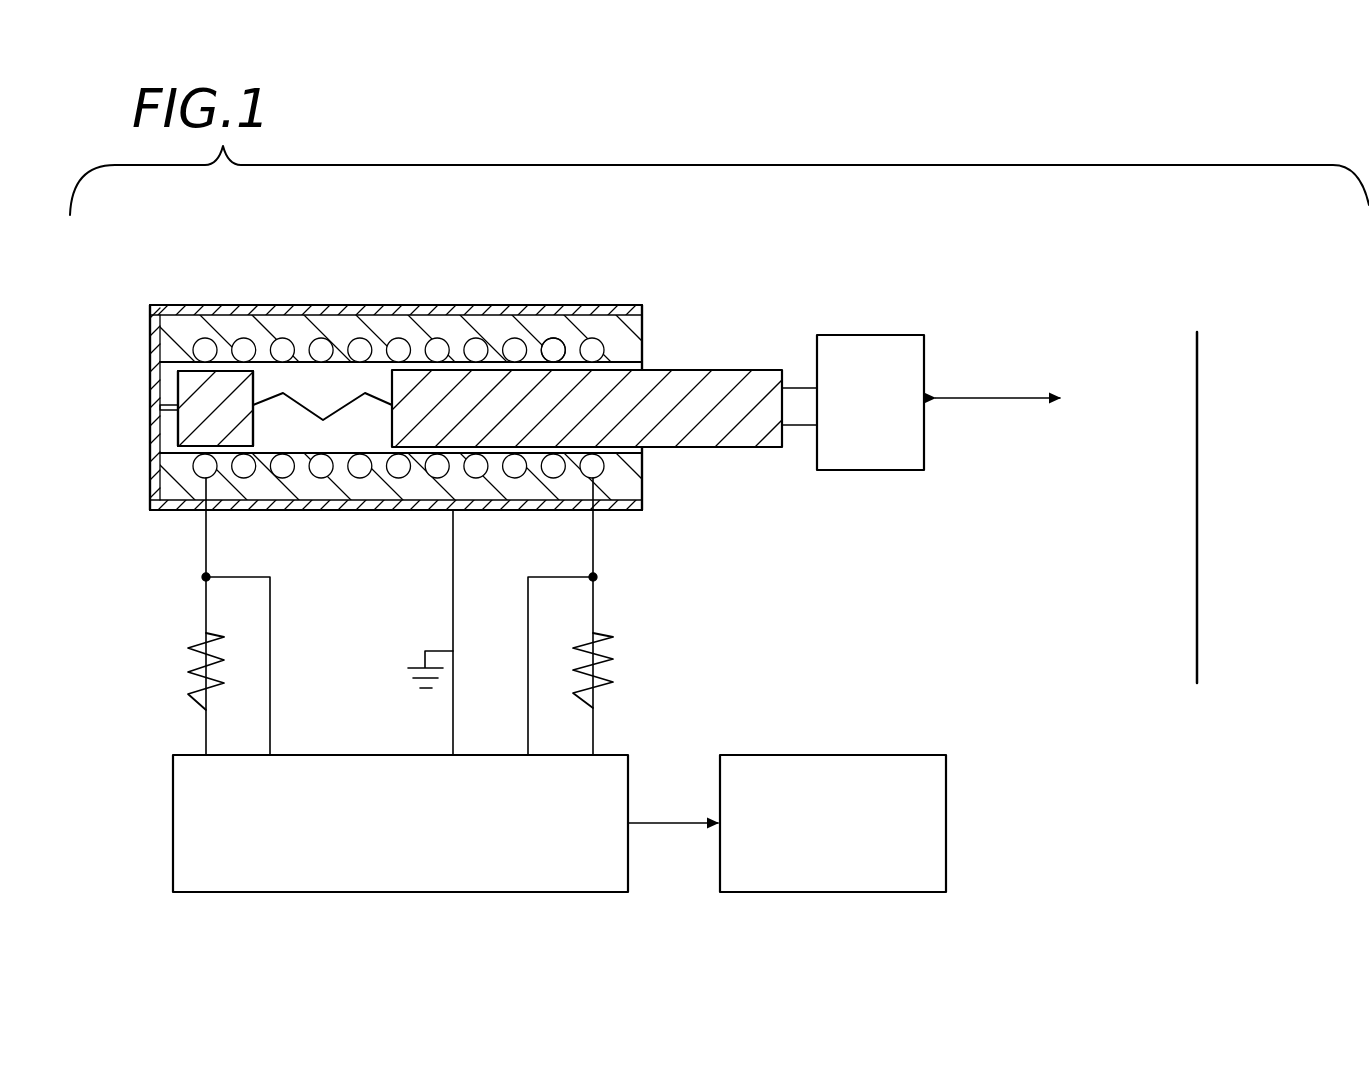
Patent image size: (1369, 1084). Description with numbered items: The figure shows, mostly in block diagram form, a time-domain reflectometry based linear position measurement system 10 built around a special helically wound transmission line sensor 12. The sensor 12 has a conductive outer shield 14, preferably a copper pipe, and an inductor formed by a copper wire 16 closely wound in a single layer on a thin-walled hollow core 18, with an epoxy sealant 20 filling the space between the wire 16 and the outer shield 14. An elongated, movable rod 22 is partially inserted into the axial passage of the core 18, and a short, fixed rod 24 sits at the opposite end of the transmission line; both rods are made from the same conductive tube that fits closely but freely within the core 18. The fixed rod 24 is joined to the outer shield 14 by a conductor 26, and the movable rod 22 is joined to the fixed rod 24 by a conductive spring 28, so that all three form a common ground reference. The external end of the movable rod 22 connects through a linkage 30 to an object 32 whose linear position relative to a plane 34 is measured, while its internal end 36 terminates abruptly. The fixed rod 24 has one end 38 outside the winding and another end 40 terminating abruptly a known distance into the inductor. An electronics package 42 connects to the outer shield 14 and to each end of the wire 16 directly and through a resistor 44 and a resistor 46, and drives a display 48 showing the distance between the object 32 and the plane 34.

The linear position measurement system 10 is at (1114, 262).
The helically wound transmission line sensor 12 is at (192, 260).
The conductive outer shield 14 is at (508, 305).
The copper wire 16 is at (553, 350).
The thin-walled hollow core 18 is at (160, 335).
The epoxy sealant 20 is at (300, 336).
The movable rod 22 is at (730, 370).
The fixed rod 24 is at (178, 436).
The conductor 26 is at (168, 405).
The conductive spring 28 is at (374, 239).
The linkage 30 is at (800, 425).
The object 32 is at (885, 335).
The plane 34 is at (1197, 545).
The internal end of the movable rod 36 is at (380, 435).
The end of the fixed rod 38 is at (203, 436).
The end of the fixed rod 40 is at (255, 436).
The electronics package 42 is at (325, 892).
The resistor 44 is at (612, 680).
The resistor 46 is at (190, 672).
The display 48 is at (912, 755).